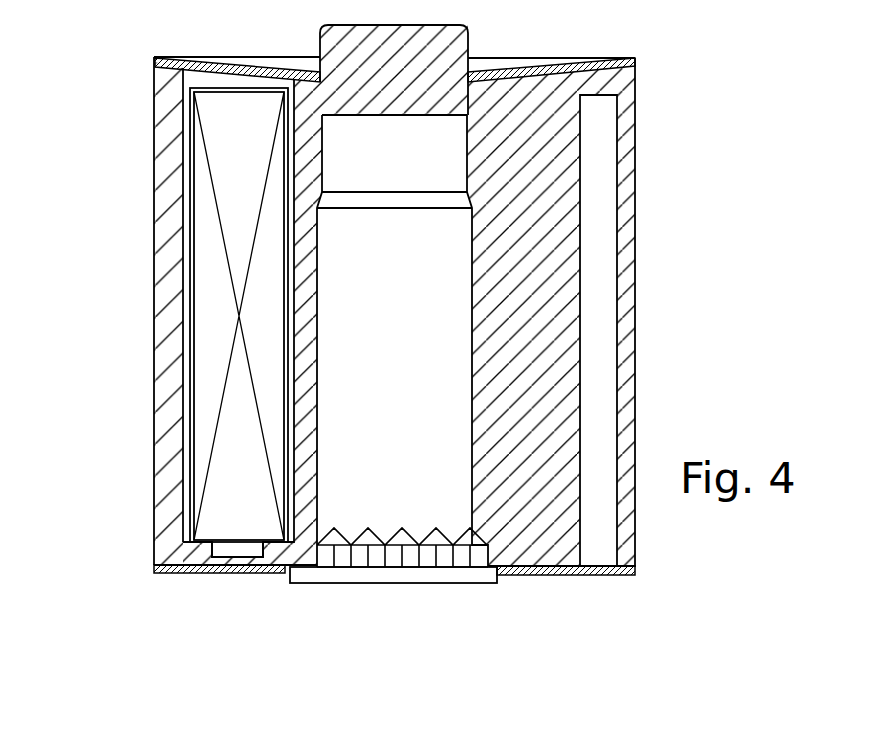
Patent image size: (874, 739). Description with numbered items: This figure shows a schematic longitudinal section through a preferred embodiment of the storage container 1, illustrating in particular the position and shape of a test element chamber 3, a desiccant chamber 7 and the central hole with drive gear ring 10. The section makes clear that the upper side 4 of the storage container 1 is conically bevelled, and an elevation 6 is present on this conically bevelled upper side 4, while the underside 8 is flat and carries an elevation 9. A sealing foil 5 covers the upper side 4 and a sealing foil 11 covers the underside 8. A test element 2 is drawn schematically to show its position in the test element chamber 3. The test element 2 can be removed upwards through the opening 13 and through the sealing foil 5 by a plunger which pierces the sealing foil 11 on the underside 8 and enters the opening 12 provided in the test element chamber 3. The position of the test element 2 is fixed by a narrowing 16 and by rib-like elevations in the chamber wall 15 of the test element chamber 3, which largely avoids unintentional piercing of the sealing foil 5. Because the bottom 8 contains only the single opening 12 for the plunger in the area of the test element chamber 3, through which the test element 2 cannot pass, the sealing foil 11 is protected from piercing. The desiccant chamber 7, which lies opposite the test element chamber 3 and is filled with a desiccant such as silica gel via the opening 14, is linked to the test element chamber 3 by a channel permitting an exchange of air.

The storage container 1 is at (128, 347).
The test element 2 is at (192, 194).
The test element chamber 3 is at (237, 78).
The conically bevelled upper side of the storage container 4 is at (610, 46).
The sealing foil for the upper side 5 is at (636, 60).
The elevation on the conically bevelled upper side of the storage container 6 is at (437, 26).
The desiccant chamber 7 is at (612, 368).
The flat underside of the storage container 8 is at (542, 610).
The elevation on the flat underside of the storage container 9 is at (372, 585).
The central hole with drive gear ring 10 is at (432, 500).
The sealing foil for the underside 11 is at (186, 575).
The opening for plunger 12 is at (238, 560).
The opening for test element removal 13 is at (203, 78).
The opening for desiccant loading 14 is at (608, 552).
The chamber wall of the test element chamber 15 is at (178, 277).
The narrowing of the test element chamber 16 is at (180, 440).